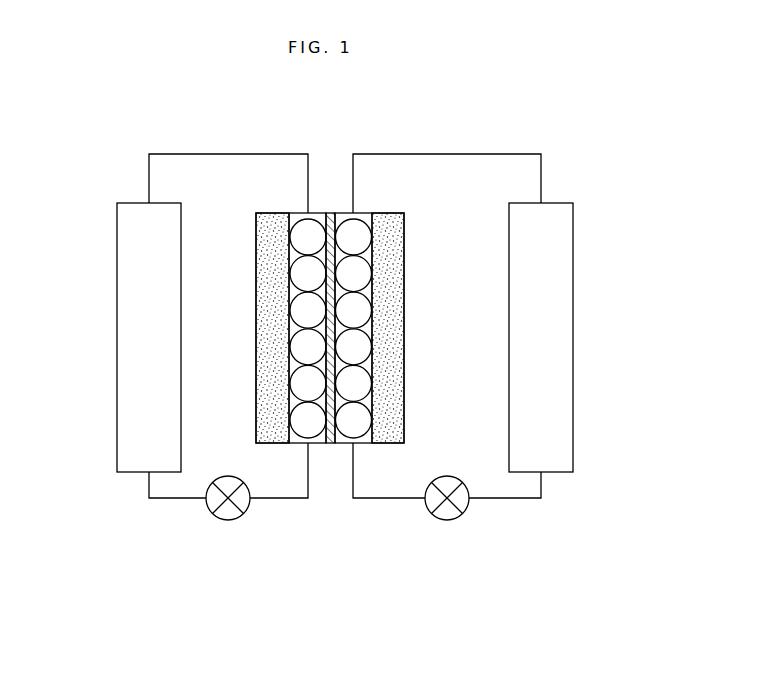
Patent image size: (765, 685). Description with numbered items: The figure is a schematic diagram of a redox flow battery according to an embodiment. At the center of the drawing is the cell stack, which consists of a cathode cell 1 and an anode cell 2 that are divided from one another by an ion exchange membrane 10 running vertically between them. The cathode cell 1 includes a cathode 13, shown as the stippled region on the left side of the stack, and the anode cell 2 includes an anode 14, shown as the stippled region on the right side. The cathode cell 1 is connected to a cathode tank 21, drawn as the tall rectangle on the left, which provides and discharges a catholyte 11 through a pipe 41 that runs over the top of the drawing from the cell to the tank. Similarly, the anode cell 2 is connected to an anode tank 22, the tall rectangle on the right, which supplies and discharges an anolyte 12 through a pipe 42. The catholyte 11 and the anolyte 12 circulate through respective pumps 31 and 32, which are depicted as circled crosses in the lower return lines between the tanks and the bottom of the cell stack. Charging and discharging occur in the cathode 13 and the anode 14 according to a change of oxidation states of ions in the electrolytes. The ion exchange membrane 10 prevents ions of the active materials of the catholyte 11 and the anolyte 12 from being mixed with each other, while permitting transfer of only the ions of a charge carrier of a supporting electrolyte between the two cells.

The cathode cell 1 is at (262, 321).
The anode cell 2 is at (398, 321).
The ion exchange membrane 10 is at (331, 211).
The catholyte 11 is at (300, 448).
The anolyte 12 is at (360, 448).
The cathode 13 is at (272, 402).
The anode 14 is at (388, 403).
The cathode tank 21 is at (120, 256).
The anode tank 22 is at (569, 258).
The pump 31 is at (228, 521).
The pump 32 is at (447, 521).
The pipe 41 is at (233, 154).
The pipe 42 is at (447, 154).